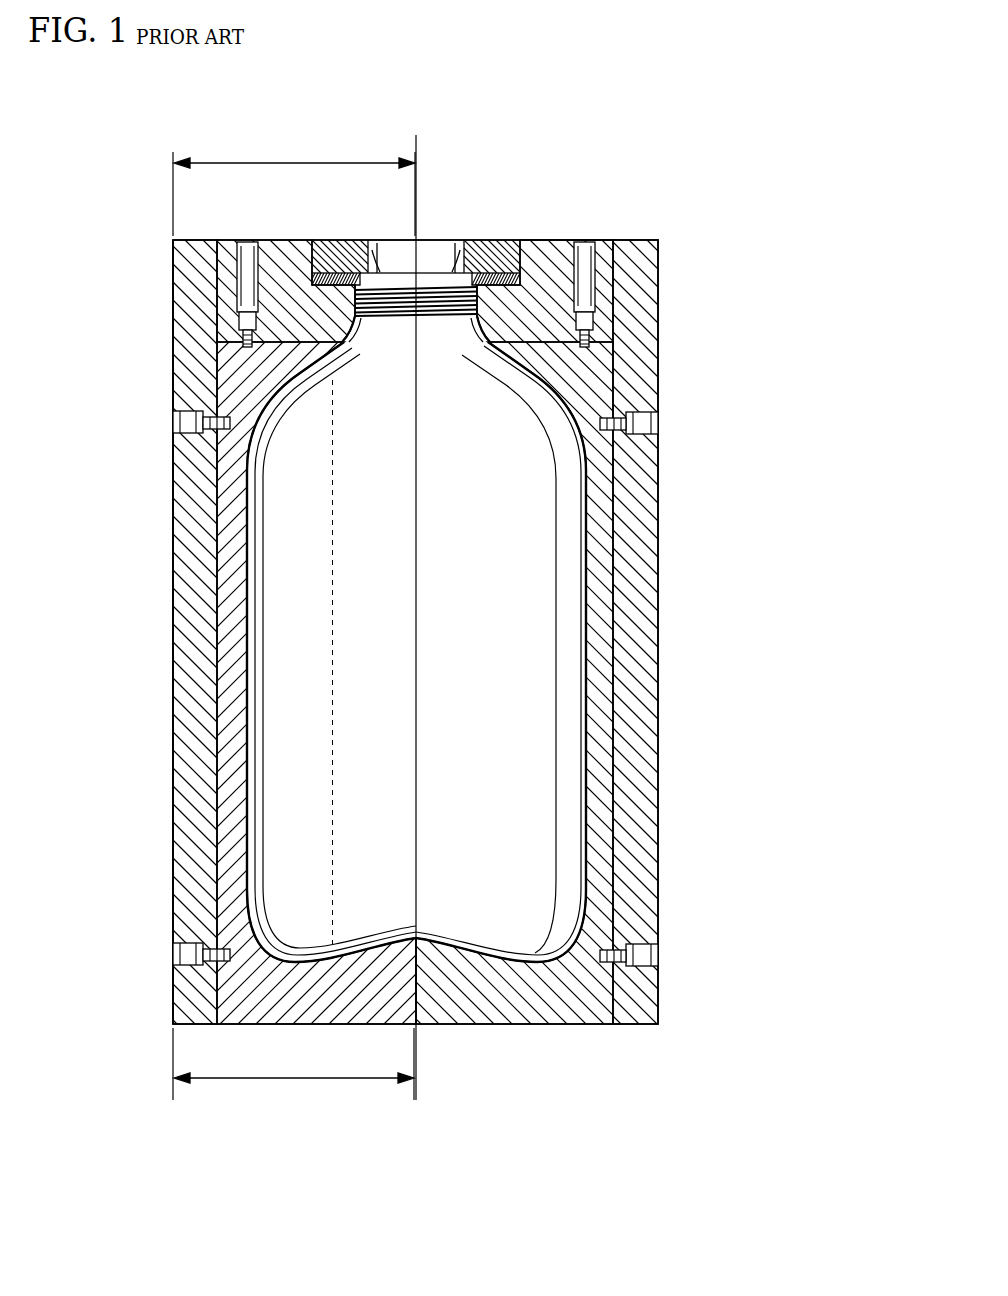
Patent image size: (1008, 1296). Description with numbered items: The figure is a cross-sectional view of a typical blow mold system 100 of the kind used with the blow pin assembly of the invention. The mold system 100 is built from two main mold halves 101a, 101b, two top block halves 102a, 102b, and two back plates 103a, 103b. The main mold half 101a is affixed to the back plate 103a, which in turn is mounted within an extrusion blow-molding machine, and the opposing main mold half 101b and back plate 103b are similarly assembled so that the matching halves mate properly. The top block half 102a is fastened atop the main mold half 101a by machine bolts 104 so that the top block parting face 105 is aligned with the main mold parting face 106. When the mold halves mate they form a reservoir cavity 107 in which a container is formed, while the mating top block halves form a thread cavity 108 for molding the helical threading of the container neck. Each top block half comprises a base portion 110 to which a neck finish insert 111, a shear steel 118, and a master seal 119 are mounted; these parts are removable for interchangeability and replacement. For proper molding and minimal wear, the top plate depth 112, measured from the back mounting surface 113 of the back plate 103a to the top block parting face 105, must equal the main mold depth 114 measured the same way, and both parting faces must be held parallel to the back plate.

The mold system 100 is at (668, 132).
The main mold half 101a is at (300, 1025).
The main mold half 101b is at (517, 1026).
The top block half 102a is at (277, 240).
The top block half 102b is at (530, 240).
The back plate 103a is at (174, 774).
The back plate 103b is at (656, 725).
The machine bolts 104 is at (250, 311).
The top block parting face 105 is at (430, 262).
The main mold parting face 106 is at (417, 500).
The reservoir cavity 107 is at (284, 672).
The thread cavity 108 is at (452, 268).
The base portion 110 is at (612, 262).
The neck finish insert 111 is at (520, 292).
The top plate depth 112 is at (298, 162).
The back mounting surface 113 is at (174, 893).
The main mold depth 114 is at (315, 1080).
The shear steel 118 is at (528, 280).
The master seal 119 is at (540, 262).